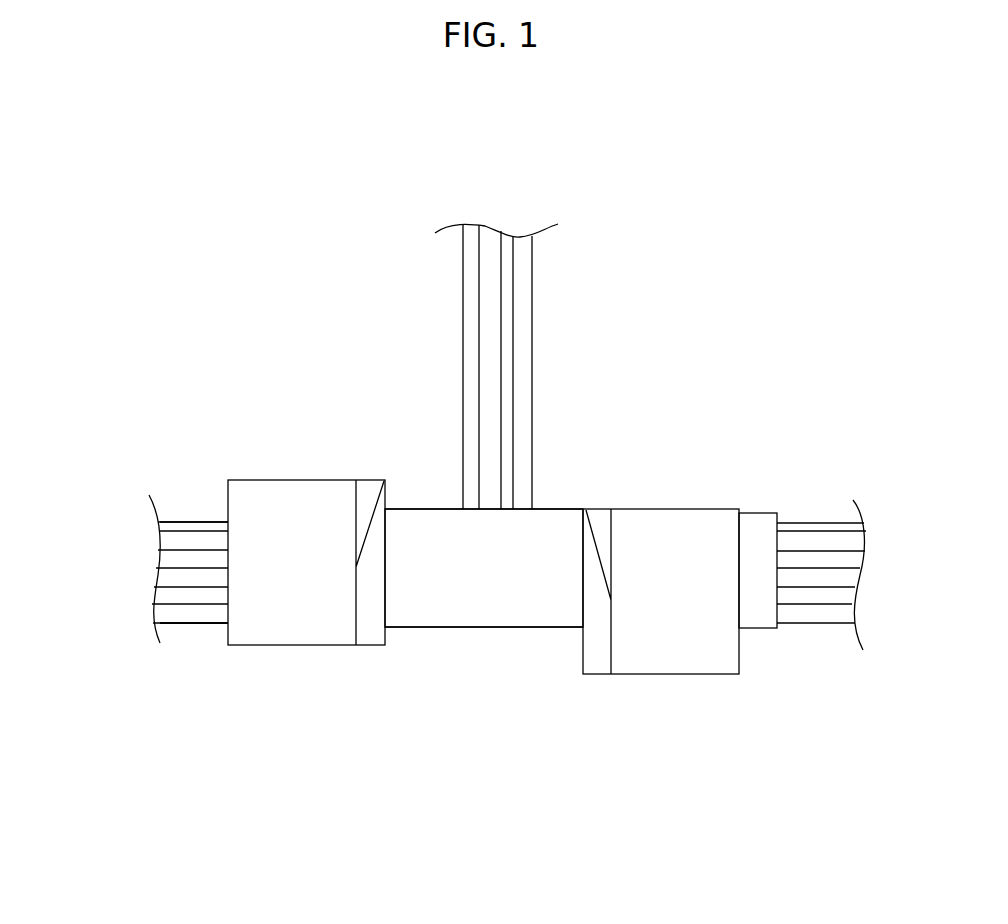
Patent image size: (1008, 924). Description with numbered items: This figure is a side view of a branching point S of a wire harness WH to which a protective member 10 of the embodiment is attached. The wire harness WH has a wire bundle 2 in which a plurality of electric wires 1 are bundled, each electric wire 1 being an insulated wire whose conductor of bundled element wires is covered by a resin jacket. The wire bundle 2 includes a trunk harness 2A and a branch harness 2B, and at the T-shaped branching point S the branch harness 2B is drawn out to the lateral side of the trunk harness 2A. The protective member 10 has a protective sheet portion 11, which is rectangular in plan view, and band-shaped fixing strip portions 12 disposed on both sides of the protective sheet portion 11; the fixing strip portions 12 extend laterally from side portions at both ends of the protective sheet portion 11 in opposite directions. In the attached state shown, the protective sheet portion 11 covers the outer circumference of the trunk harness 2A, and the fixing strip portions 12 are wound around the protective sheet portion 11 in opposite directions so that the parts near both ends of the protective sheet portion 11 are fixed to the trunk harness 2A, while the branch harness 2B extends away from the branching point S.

The electric wire 1 is at (173, 610).
The wire bundle 2 is at (189, 519).
The trunk harness 2A is at (203, 626).
The branch harness 2B is at (463, 322).
The protective member 10 is at (428, 634).
The protective sheet portion 11 is at (491, 598).
The fixing strip portion 12 is at (295, 495).
The branching point S is at (577, 467).
The wire harness WH is at (183, 634).